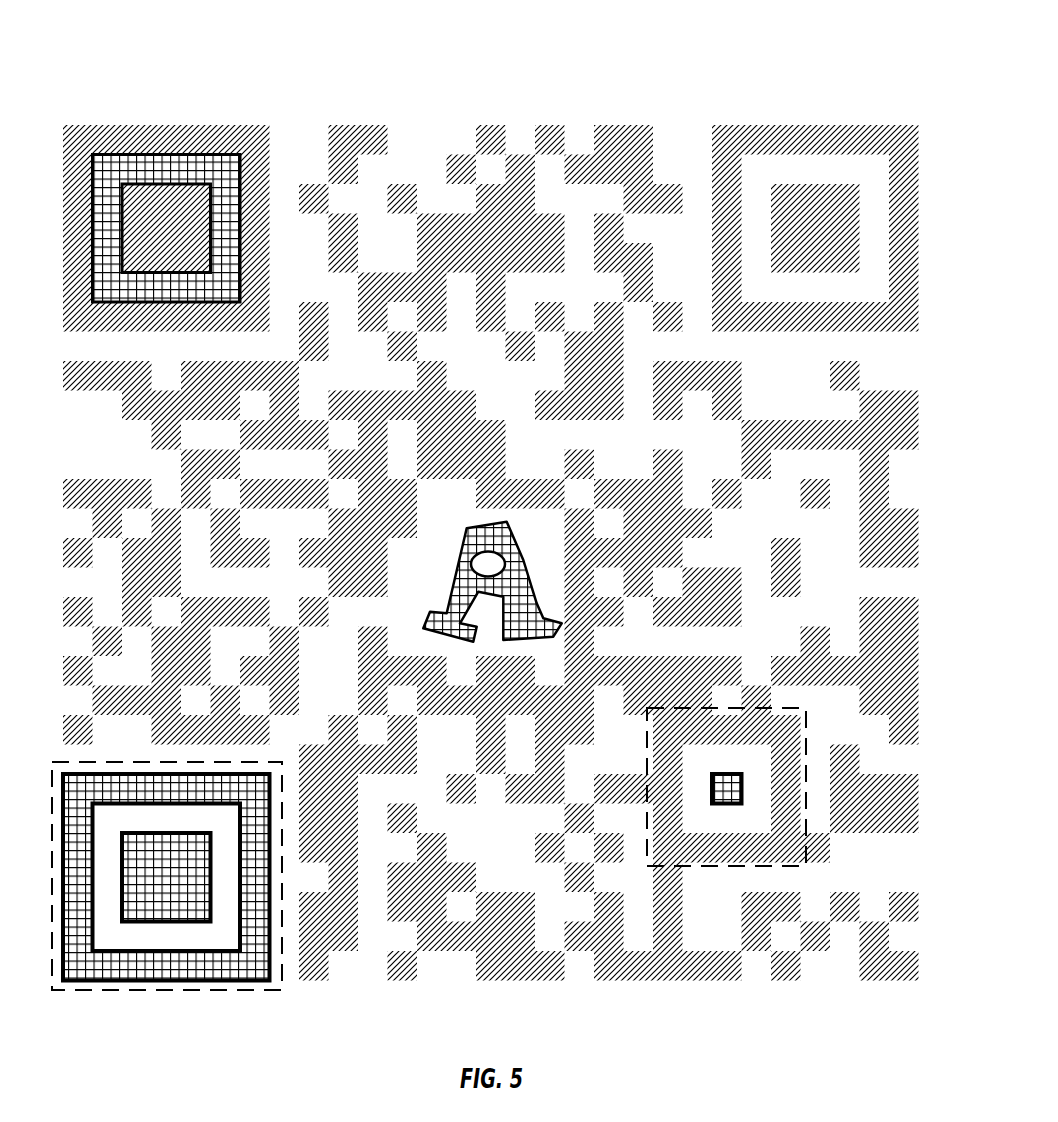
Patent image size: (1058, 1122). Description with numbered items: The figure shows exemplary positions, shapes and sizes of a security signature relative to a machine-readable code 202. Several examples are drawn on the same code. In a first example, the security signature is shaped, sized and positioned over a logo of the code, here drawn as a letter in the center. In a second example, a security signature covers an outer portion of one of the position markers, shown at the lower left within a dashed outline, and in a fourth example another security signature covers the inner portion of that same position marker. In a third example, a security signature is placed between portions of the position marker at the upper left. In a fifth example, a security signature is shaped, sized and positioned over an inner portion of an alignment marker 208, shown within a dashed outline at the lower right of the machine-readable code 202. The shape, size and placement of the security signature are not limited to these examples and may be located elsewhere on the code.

The machine-readable code 202 is at (879, 69).
The alignment marker 208 is at (690, 867).